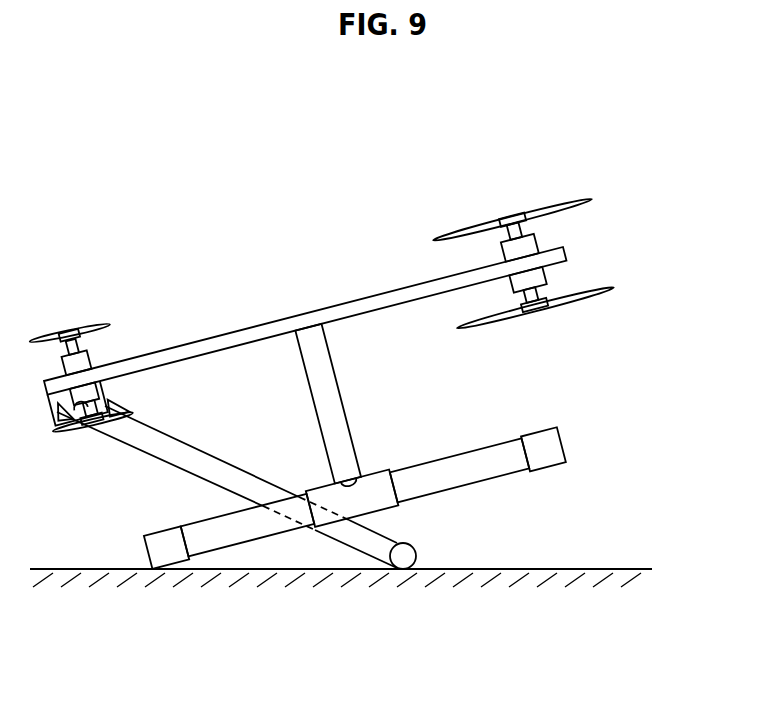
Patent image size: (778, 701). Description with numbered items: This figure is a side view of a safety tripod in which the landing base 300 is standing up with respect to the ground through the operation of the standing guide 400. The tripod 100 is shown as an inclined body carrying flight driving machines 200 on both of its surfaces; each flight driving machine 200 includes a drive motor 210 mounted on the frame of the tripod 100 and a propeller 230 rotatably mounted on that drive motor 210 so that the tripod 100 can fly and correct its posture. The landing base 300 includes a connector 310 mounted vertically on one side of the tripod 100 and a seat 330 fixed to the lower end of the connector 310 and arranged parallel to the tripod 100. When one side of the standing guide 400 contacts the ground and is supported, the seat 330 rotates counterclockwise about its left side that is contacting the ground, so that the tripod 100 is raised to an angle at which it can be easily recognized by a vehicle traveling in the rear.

The tripod 100 is at (212, 343).
The flight driving machine 200 is at (523, 204).
The drive motor 210 is at (503, 237).
The propeller 230 is at (563, 200).
The landing base 300 is at (443, 446).
The connector 310 is at (335, 407).
The seat 330 is at (480, 467).
The standing guide 400 is at (362, 542).